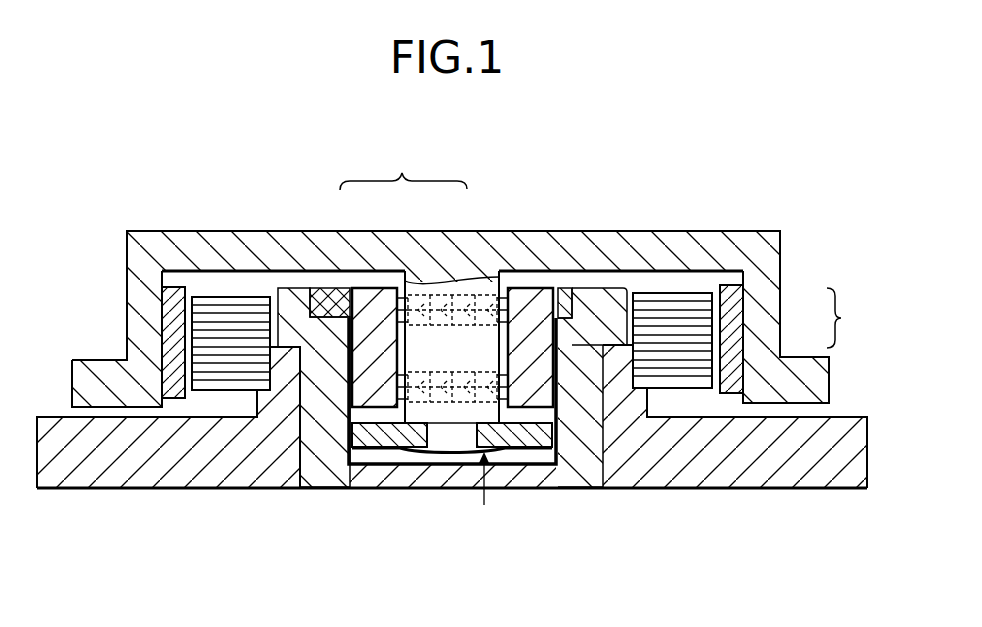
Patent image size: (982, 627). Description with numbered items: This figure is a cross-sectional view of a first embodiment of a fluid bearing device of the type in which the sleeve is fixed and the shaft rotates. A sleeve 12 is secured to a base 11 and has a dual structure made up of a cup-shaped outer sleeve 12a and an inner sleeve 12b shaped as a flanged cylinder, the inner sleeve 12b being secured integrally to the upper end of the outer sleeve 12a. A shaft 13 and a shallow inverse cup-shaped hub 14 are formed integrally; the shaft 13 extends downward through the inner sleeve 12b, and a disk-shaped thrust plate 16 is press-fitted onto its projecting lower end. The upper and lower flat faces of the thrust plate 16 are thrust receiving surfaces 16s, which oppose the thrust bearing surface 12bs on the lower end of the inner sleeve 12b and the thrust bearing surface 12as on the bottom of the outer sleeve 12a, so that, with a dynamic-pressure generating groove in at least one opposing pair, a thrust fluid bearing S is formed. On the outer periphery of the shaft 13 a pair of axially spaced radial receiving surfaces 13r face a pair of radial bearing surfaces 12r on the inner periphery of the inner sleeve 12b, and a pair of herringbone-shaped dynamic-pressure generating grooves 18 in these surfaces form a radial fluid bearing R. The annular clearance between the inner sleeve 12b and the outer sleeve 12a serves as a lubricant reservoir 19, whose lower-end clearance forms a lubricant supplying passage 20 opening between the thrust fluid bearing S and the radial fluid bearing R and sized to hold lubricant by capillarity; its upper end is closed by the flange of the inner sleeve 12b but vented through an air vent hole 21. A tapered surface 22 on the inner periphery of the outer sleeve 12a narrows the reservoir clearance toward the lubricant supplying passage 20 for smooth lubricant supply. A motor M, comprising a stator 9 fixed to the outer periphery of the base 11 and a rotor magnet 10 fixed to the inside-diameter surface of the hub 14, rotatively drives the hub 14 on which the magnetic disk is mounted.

The stator 9 is at (693, 337).
The rotor magnet 10 is at (730, 303).
The base 11 is at (478, 430).
The sleeve 12 is at (426, 388).
The outer sleeve 12a is at (464, 487).
The thrust bearing surface 12as is at (510, 458).
The inner sleeve 12b is at (360, 365).
The thrust bearing surface 12bs is at (542, 430).
The radial bearing surfaces 12r is at (418, 364).
The shaft 13 is at (447, 300).
The radial receiving surfaces 13r is at (353, 320).
The hub 14 is at (148, 230).
The thrust plate 16 is at (595, 366).
The thrust receiving surfaces 16s is at (443, 480).
The dynamic-pressure generating grooves 18 is at (457, 365).
The lubricant reservoir 19 is at (300, 488).
The lubricant supplying passage 20 is at (617, 483).
The air vent hole 21 is at (565, 316).
The tapered surface 22 is at (574, 400).
The radial fluid bearing R is at (412, 167).
The thrust fluid bearing S is at (491, 533).
The motor M is at (852, 331).